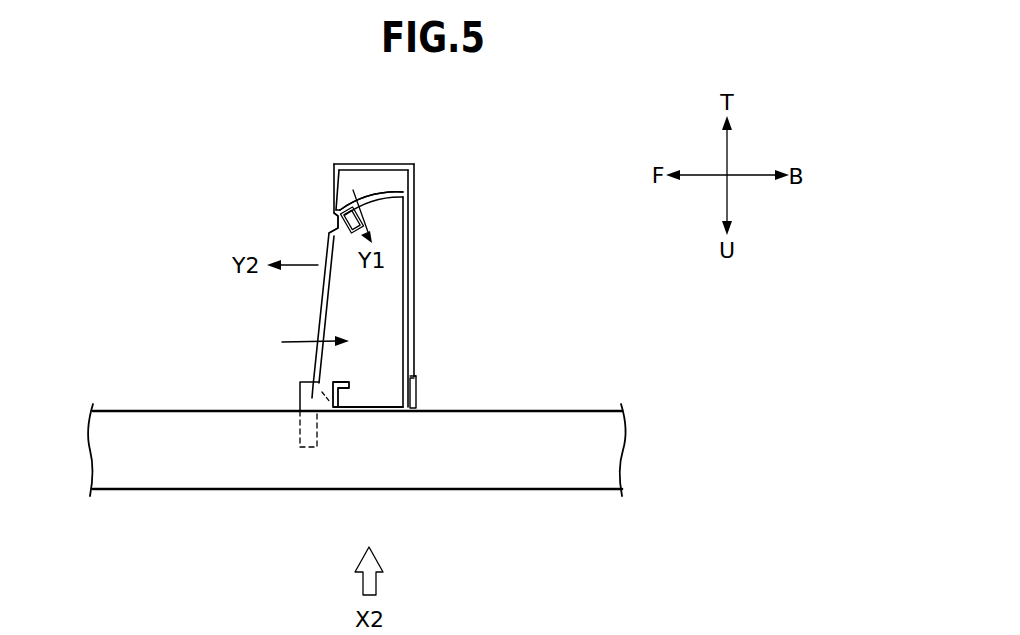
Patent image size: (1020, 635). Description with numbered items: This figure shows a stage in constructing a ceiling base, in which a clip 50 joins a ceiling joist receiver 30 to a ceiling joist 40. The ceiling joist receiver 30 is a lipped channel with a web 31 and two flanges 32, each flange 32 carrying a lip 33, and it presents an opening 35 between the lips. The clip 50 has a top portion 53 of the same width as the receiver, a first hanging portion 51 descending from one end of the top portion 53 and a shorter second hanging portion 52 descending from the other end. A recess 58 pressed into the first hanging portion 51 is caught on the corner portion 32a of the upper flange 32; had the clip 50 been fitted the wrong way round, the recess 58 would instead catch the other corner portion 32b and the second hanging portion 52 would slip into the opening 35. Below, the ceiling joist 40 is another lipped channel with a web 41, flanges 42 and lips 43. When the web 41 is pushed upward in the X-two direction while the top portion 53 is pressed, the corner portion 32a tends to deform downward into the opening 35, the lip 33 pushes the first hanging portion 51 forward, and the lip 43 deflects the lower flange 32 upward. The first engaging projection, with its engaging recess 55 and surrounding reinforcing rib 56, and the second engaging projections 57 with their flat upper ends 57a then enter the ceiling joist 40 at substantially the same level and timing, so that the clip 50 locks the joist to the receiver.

The ceiling joist receiver 30 is at (424, 259).
The web 31 is at (404, 228).
The flange 32 is at (376, 193).
The corner portion 32a is at (337, 210).
The corner portion 32b is at (404, 191).
The lip 33 is at (333, 213).
The opening 35 is at (282, 342).
The ceiling joist 40 is at (415, 453).
The web 41 is at (392, 504).
The flange 42 is at (605, 450).
The lip 43 is at (600, 411).
The clip 50 is at (354, 279).
The first hanging portion 51 is at (321, 310).
The second hanging portion 52 is at (414, 343).
The top portion 53 is at (389, 163).
The engaging recess 55 is at (330, 402).
The reinforcing rib 56 is at (300, 397).
The second engaging projection 57 is at (411, 386).
The upper end 57a is at (414, 377).
The recess 58 is at (328, 232).